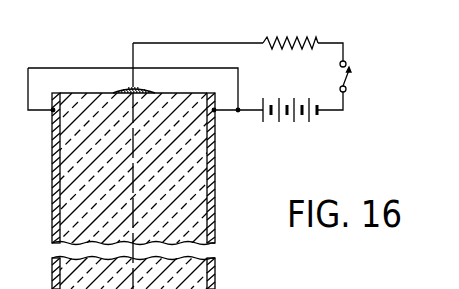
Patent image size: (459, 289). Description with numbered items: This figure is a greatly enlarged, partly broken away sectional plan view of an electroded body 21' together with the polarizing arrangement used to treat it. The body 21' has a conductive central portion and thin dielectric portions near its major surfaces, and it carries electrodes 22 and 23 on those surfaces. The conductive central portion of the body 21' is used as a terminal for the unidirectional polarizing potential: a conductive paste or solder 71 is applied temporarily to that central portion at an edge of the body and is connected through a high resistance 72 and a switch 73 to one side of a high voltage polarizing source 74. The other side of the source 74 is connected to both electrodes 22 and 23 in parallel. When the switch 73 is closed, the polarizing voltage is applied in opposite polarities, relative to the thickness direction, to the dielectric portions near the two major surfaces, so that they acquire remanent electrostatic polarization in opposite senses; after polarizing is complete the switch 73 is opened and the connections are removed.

The body 21' is at (208, 191).
The electrode 22 is at (52, 204).
The electrode 23 is at (215, 202).
The conductive paste or solder 71 is at (143, 88).
The high resistance 72 is at (266, 41).
The switch 73 is at (350, 79).
The high voltage polarizing source 74 is at (293, 116).